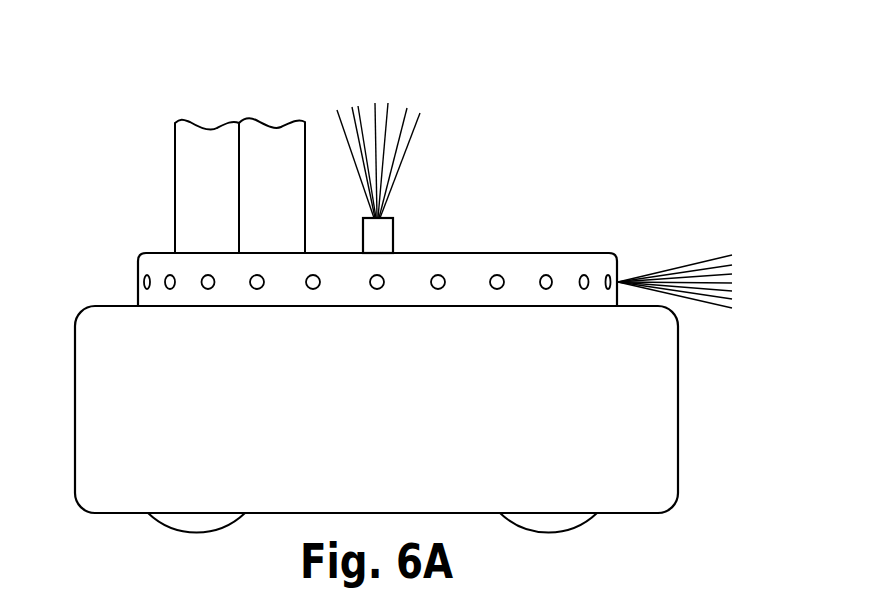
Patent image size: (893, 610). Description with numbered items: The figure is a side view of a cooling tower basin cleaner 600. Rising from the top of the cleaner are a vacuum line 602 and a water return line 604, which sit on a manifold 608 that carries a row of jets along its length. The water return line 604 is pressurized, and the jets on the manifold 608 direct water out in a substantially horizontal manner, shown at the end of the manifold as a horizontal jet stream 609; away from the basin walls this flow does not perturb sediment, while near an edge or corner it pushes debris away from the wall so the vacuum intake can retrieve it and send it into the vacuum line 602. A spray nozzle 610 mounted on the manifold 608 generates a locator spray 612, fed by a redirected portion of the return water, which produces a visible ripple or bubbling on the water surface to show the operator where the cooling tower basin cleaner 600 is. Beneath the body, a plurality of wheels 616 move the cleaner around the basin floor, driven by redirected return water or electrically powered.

The cooling tower basin cleaner 600 is at (678, 405).
The vacuum line 602 is at (198, 90).
The water return line 604 is at (283, 90).
The manifold 608 is at (123, 253).
The side spray 609 is at (700, 278).
The spray nozzle 610 is at (393, 233).
The locator spray 612 is at (402, 130).
The wheels 616 is at (193, 532).